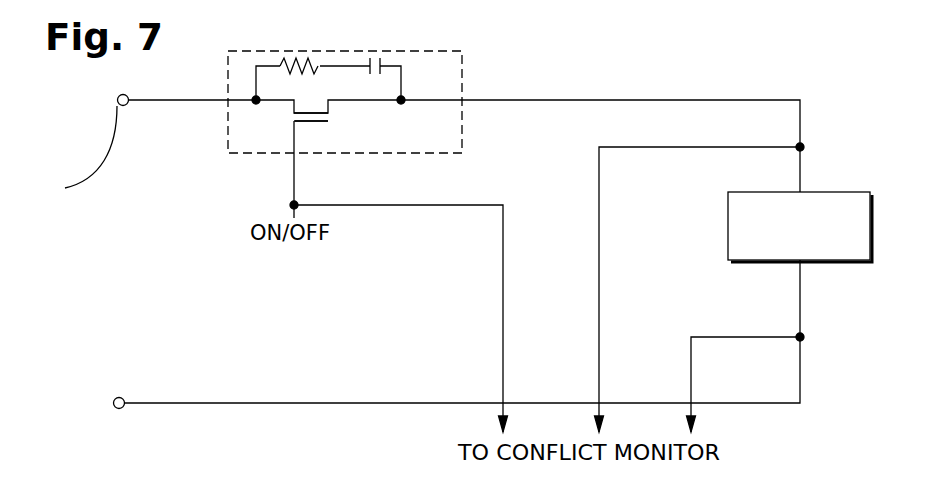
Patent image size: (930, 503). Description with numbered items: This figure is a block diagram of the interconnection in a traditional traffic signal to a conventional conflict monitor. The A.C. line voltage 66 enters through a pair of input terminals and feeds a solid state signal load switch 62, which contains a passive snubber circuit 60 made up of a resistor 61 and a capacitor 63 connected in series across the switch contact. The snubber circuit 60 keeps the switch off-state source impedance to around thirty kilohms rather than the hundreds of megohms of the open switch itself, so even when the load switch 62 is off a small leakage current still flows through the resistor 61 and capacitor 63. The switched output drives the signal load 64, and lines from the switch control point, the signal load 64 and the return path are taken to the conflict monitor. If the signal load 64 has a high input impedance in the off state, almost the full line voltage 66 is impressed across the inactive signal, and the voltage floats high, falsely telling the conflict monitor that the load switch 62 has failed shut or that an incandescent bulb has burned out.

The snubber circuit 60 is at (352, 98).
The resistor 61 is at (287, 58).
The load switch 62 is at (294, 128).
The capacitor 63 is at (381, 64).
The signal load 64 is at (808, 197).
The line voltage 66 is at (114, 398).